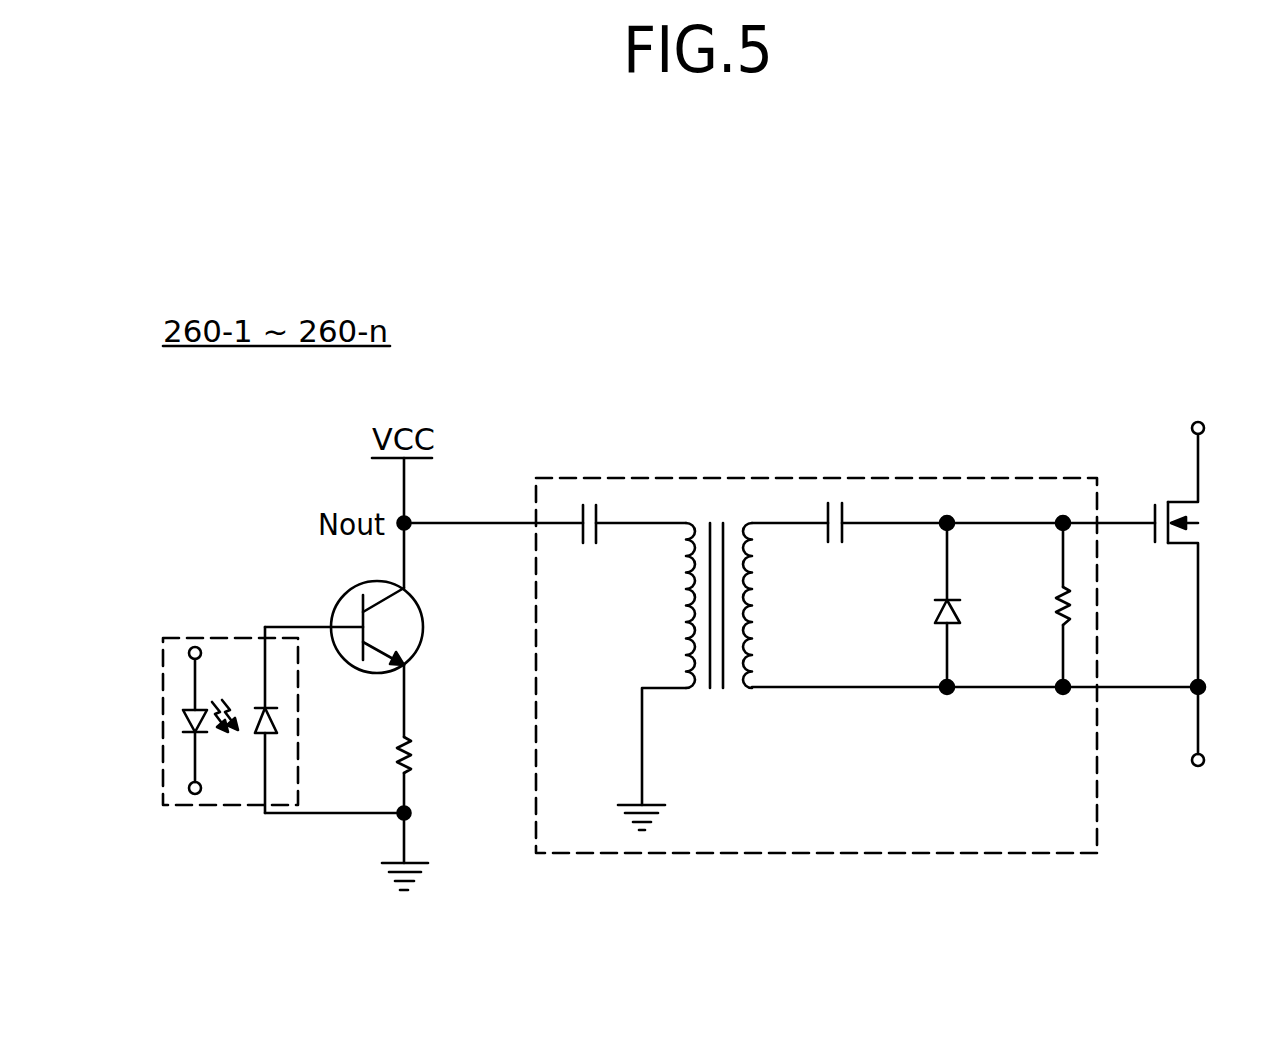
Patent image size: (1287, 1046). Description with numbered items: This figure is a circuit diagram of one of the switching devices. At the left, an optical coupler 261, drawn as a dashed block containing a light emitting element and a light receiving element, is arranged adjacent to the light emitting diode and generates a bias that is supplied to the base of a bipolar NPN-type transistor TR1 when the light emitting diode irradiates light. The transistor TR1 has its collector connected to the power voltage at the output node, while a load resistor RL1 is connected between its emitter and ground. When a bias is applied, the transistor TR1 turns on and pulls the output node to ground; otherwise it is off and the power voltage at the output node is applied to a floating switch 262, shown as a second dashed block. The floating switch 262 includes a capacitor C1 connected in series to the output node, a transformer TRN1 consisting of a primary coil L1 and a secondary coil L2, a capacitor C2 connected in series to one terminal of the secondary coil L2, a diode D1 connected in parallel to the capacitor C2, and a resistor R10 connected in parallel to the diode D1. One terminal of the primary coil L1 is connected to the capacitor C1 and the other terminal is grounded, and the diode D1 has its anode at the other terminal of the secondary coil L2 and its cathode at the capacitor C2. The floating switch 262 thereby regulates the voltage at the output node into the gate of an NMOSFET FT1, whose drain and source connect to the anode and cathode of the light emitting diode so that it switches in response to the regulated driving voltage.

The optical coupler 261 is at (203, 637).
The floating switch 262 is at (867, 612).
The bipolar NPN-type transistor TR1 is at (372, 659).
The load resistor RL1 is at (438, 756).
The capacitor C1 is at (590, 544).
The capacitor C2 is at (830, 543).
The primary coil L1 is at (670, 605).
The secondary coil L2 is at (764, 605).
The transformer TRN1 is at (715, 640).
The diode D1 is at (926, 605).
The resistor R10 is at (1031, 605).
The n-channel metal-oxide-semiconductor field effect transistor (NMOSFET) FT1 is at (1206, 594).